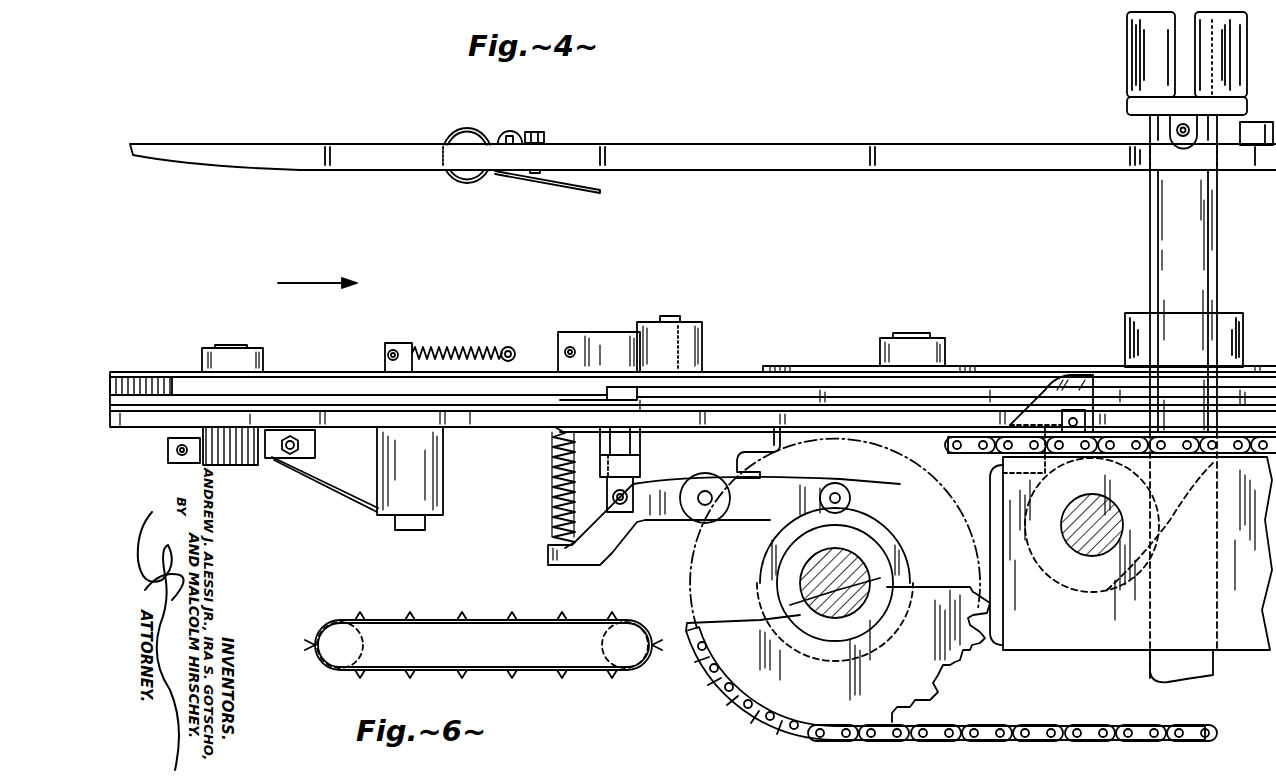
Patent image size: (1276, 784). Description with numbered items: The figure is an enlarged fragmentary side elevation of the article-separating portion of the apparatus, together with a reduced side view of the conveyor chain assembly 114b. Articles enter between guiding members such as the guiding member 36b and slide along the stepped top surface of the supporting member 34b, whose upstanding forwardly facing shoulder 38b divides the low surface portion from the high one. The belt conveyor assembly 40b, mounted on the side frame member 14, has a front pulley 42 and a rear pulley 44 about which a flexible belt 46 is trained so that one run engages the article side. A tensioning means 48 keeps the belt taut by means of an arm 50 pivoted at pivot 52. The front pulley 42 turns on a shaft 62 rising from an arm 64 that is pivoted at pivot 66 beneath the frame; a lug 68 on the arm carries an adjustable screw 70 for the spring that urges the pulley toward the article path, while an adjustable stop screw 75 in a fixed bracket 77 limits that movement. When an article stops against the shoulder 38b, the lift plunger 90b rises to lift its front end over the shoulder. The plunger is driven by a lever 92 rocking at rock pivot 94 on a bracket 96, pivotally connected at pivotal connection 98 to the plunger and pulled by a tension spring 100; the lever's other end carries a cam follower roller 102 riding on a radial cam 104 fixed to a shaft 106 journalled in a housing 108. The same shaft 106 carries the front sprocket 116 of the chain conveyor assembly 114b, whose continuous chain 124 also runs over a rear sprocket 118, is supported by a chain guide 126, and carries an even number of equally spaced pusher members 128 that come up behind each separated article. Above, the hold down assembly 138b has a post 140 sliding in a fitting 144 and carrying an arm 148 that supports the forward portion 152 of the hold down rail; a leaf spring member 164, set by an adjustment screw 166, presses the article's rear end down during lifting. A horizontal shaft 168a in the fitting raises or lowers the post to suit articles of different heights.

In FIG. 4, the side frame member 14 is at (518, 430).
In FIG. 4, the supporting member 34b is at (495, 425).
In FIG. 4, the guiding member 36b is at (150, 375).
In FIG. 4, the shoulder 38b is at (637, 393).
In FIG. 4, the belt conveyor assembly 40b is at (745, 302).
In FIG. 4, the front pulley 42 is at (290, 372).
In FIG. 4, the rear pulley 44 is at (855, 366).
In FIG. 4, the flexible belt 46 is at (350, 372).
In FIG. 4, the tensioning means 48 is at (602, 297).
In FIG. 4, the arm 50 is at (597, 332).
In FIG. 4, the pivot 52 is at (672, 316).
In FIG. 4, the shaft 62 is at (225, 348).
In FIG. 4, the arm 64 is at (370, 500).
In FIG. 4, the pivot 66 is at (410, 530).
In FIG. 4, the lug 68 is at (168, 450).
In FIG. 4, the adjustable screw 70 is at (185, 456).
In FIG. 4, the adjustable stop screw 75 is at (290, 458).
In FIG. 4, the fixed bracket 77 is at (278, 458).
In FIG. 4, the lift plunger 90b is at (622, 390).
In FIG. 4, the lever 92 is at (690, 515).
In FIG. 4, the rock pivot 94 is at (700, 505).
In FIG. 4, the bracket 96 is at (780, 440).
In FIG. 4, the pivotal connection 98 is at (613, 497).
In FIG. 4, the tension spring 100 is at (552, 505).
In FIG. 4, the cam follower roller 102 is at (848, 472).
In FIG. 4, the radial cam 104 is at (760, 570).
In FIG. 4, the shaft 106 is at (802, 583).
In FIG. 4, the housing 108 is at (990, 650).
In FIG. 4, the chain conveyor assembly 114b is at (770, 744).
In FIG. 6, the chain conveyor assembly 114b is at (551, 689).
In FIG. 4, the front sprocket 116 is at (735, 680).
In FIG. 6, the front sprocket 116 is at (345, 640).
In FIG. 6, the rear sprocket 118 is at (620, 640).
In FIG. 4, the continuous chain 124 is at (1040, 725).
In FIG. 6, the continuous chain 124 is at (483, 620).
In FIG. 4, the chain guide 126 is at (1078, 650).
In FIG. 4, the pusher member 128 is at (1090, 338).
In FIG. 6, the pusher member 128 is at (562, 612).
In FIG. 4, the hold down assembly 138b is at (1040, 75).
In FIG. 4, the post 140 is at (1150, 241).
In FIG. 4, the fitting 144 is at (1135, 313).
In FIG. 4, the arm 148 is at (1128, 30).
In FIG. 4, the forward portion 152 is at (775, 148).
In FIG. 4, the leaf spring member 164 is at (540, 178).
In FIG. 4, the adjustment screw 166 is at (542, 133).
In FIG. 4, the shaft 168a is at (1090, 495).